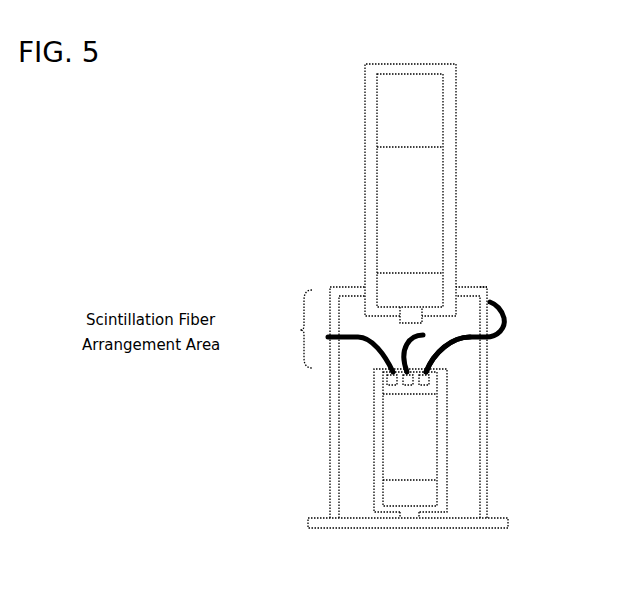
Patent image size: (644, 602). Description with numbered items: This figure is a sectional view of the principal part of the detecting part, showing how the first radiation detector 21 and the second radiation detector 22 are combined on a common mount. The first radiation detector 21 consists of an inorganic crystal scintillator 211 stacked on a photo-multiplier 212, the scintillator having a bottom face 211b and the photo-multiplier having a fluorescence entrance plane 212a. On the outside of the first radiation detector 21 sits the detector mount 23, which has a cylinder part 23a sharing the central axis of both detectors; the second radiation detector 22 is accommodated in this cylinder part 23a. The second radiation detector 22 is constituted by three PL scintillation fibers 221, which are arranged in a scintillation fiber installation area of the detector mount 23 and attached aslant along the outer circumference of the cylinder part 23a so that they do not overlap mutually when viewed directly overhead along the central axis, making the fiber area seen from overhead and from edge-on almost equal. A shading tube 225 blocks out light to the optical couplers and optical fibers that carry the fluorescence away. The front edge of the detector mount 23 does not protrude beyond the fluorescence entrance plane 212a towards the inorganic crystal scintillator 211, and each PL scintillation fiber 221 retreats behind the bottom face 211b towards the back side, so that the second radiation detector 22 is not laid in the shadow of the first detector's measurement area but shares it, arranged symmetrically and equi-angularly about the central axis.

The first radiation detector 21 is at (456, 166).
The inorganic crystal scintillator 211 is at (444, 100).
The bottom face 211b is at (390, 158).
The photo-multiplier 212 is at (376, 215).
The fluorescence entrance plane 212a is at (393, 147).
The second radiation detector 22 is at (447, 467).
The PL scintillation fiber 221 is at (508, 322).
The shading tube 225 is at (460, 343).
The detector mount 23 is at (486, 413).
The cylinder part 23a is at (486, 288).